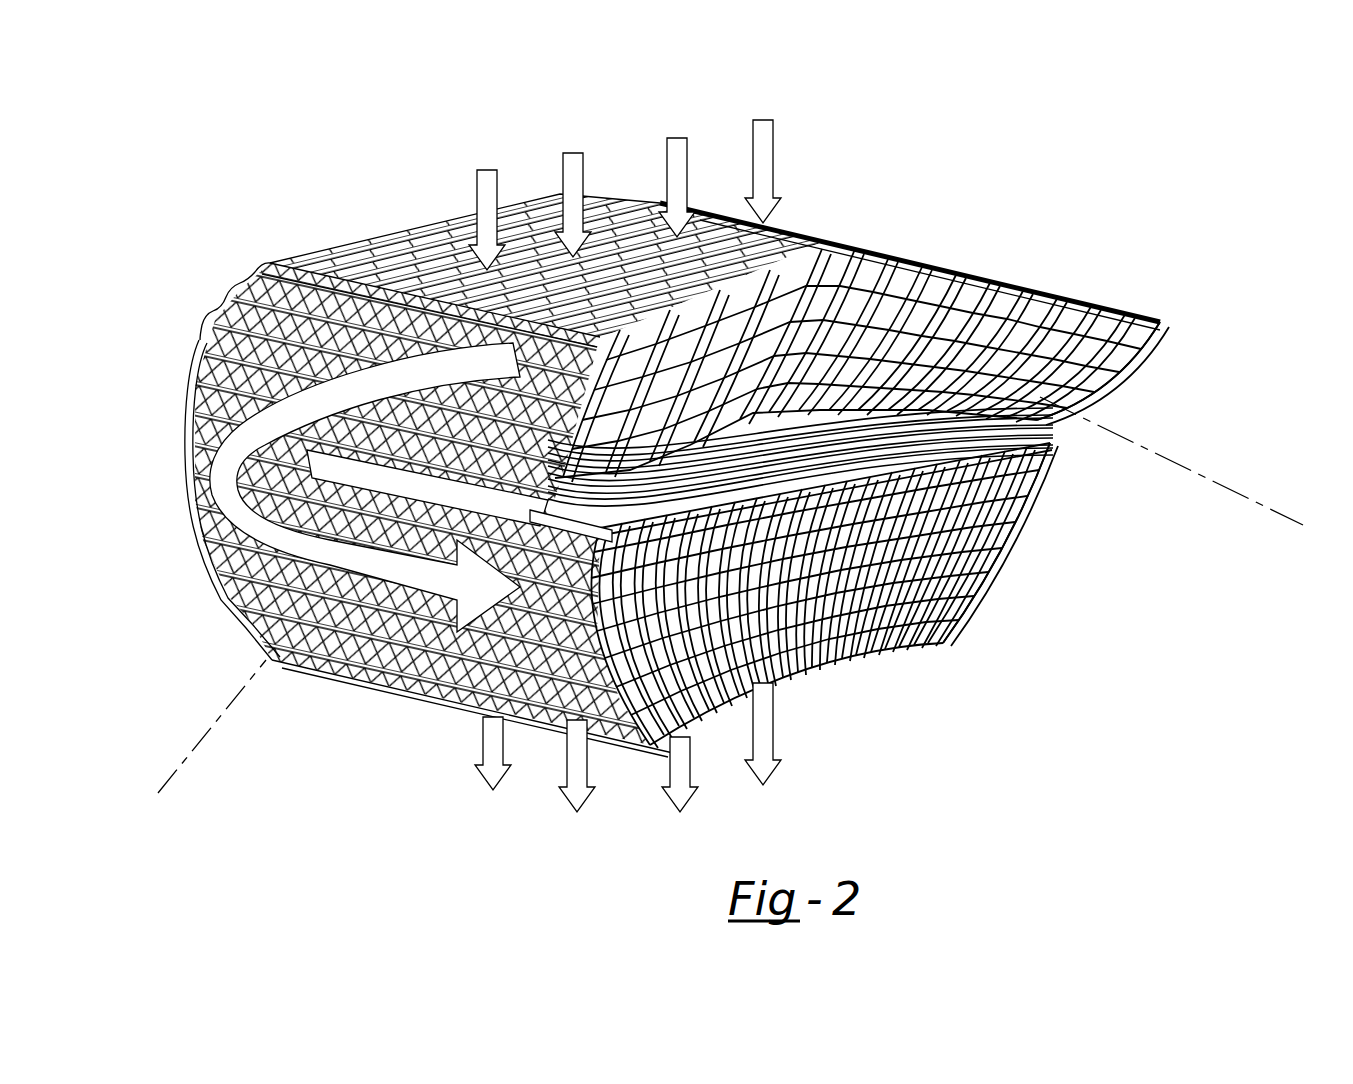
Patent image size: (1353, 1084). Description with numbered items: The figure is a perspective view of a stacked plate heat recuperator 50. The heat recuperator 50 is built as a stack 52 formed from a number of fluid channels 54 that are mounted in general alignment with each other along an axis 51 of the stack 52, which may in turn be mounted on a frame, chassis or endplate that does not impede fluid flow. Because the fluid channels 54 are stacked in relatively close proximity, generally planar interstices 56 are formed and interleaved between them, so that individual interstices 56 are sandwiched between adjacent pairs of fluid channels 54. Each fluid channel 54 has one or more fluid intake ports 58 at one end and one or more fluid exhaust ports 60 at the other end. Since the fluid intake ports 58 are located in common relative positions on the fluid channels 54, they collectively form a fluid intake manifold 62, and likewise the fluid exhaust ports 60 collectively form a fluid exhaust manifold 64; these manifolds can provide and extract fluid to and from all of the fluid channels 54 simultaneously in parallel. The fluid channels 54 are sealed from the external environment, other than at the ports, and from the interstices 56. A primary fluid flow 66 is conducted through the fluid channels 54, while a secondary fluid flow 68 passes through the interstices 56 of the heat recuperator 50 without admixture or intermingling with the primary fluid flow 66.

The heat recuperator 50 is at (182, 166).
The axis 51 is at (203, 733).
The stack 52 is at (943, 258).
The fluid channel 54 is at (207, 392).
The interstices 56 is at (283, 261).
The fluid intake port 58 is at (1090, 342).
The fluid exhaust port 60 is at (917, 637).
The fluid intake manifold 62 is at (1182, 315).
The fluid exhaust manifold 64 is at (1073, 445).
The primary fluid flow 66 is at (230, 527).
The secondary fluid flow 68 is at (455, 163).